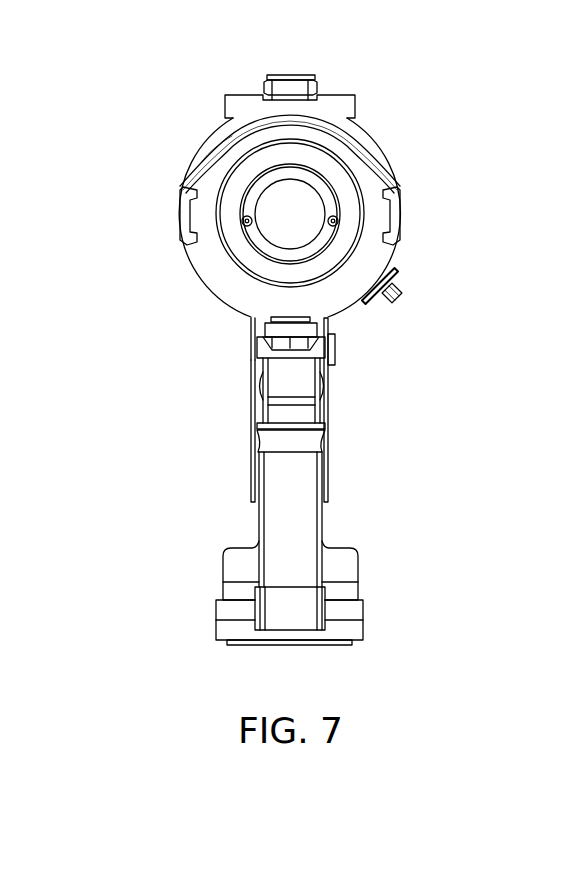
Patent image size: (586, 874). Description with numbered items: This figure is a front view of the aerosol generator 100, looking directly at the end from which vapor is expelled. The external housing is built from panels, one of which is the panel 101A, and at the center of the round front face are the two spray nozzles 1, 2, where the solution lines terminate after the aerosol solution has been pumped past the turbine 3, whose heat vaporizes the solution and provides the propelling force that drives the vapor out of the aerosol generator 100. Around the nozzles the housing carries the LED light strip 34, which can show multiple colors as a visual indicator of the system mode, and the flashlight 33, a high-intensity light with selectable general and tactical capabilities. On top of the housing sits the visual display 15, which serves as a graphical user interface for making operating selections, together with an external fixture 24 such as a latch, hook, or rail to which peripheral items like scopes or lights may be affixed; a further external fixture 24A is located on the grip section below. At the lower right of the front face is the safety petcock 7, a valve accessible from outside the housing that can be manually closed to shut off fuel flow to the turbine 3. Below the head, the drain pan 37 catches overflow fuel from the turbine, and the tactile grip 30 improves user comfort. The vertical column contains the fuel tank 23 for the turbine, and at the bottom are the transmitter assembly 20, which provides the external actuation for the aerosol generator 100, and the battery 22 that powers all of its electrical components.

The aerosol generator 100 is at (353, 80).
The visual display 15 is at (232, 95).
The external fixture 24 is at (262, 77).
The housing panel 101A is at (212, 147).
The LED light strip 34 is at (385, 153).
The turbine 3 is at (316, 185).
The flashlight 33 is at (187, 252).
The spray nozzle 1 is at (241, 222).
The spray nozzle 2 is at (339, 221).
The safety petcock 7 is at (400, 268).
The drain pan 37 is at (316, 316).
The tactile grip 30 is at (338, 356).
The external fixture 24A is at (252, 348).
The fuel tank 23 is at (253, 473).
The transmitter assembly 20 is at (256, 545).
The battery 22 is at (359, 583).